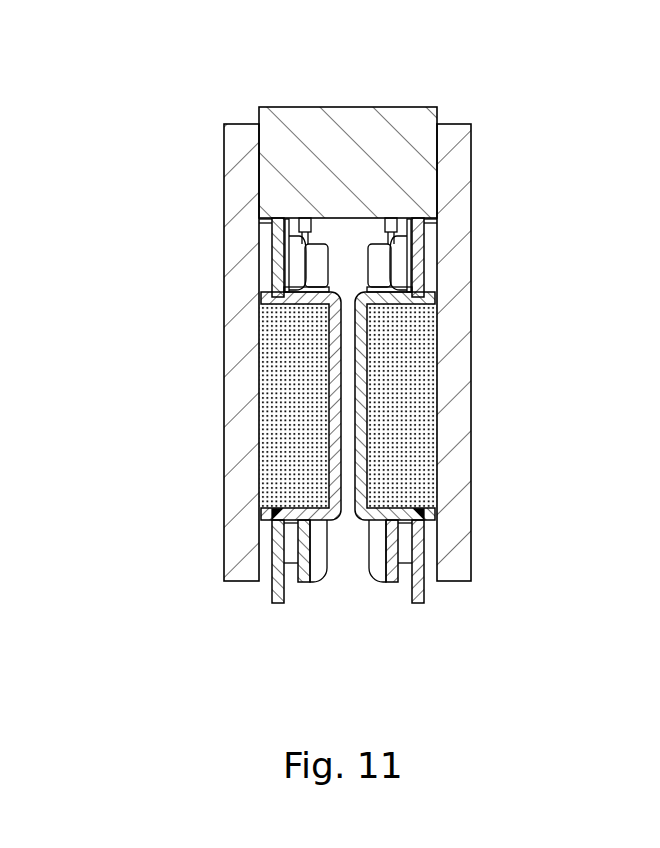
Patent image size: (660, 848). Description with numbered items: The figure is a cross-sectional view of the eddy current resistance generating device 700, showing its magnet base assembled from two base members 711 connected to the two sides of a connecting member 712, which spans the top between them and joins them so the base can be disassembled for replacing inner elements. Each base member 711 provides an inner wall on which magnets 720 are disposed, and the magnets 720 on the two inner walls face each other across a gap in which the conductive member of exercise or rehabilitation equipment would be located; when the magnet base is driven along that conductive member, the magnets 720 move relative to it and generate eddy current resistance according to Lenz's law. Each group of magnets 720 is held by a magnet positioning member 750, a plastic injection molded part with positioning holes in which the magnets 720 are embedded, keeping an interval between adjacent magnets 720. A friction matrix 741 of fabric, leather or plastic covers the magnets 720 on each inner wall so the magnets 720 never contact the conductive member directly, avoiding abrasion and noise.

The eddy current resistance generating device 700 is at (212, 55).
The base member 711 is at (243, 231).
The connecting member 712 is at (342, 128).
The magnet 720 is at (280, 393).
The friction matrix 741 is at (305, 453).
The magnet positioning member 750 is at (270, 581).